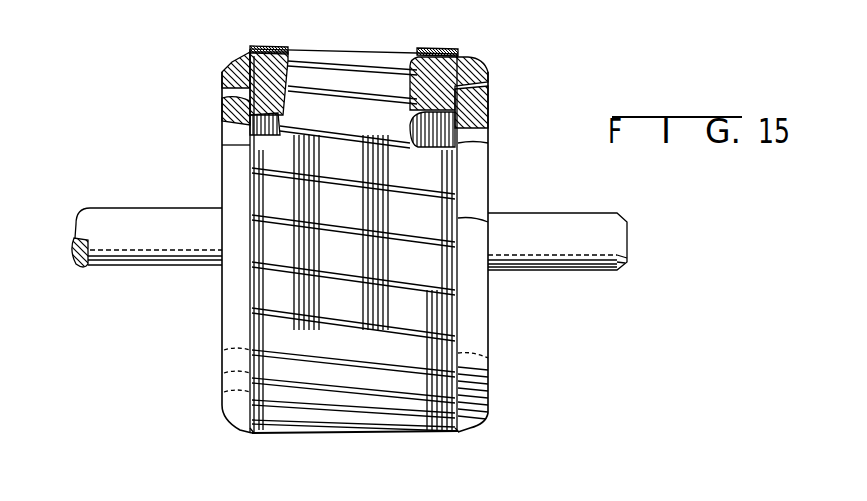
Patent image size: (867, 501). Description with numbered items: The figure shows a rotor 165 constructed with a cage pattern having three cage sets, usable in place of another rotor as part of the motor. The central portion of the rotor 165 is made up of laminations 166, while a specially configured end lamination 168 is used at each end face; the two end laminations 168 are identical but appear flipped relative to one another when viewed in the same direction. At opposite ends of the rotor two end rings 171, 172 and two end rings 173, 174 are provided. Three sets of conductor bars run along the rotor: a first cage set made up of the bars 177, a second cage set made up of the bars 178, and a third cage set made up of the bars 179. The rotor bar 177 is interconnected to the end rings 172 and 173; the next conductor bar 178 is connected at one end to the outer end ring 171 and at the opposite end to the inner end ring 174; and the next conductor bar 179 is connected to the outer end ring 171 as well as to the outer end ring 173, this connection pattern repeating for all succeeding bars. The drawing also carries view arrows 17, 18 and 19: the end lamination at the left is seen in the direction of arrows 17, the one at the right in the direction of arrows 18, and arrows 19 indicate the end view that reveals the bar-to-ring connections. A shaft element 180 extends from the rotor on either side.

The rotor 165 is at (458, 50).
The laminations 166 is at (360, 425).
The end lamination 168 is at (252, 427).
The outer end ring 171 is at (486, 76).
The end ring 172 is at (487, 112).
The outer end ring 173 is at (222, 71).
The inner end ring 174 is at (222, 110).
The rotor bar 177 is at (323, 62).
The conductor bar 178 is at (390, 50).
The conductor bar 179 is at (335, 95).
The tube 180 is at (565, 213).
The arrows 17— 17 is at (252, 15).
The arrows 18— 18 is at (457, 15).
The arrows 19— 19 is at (580, 13).